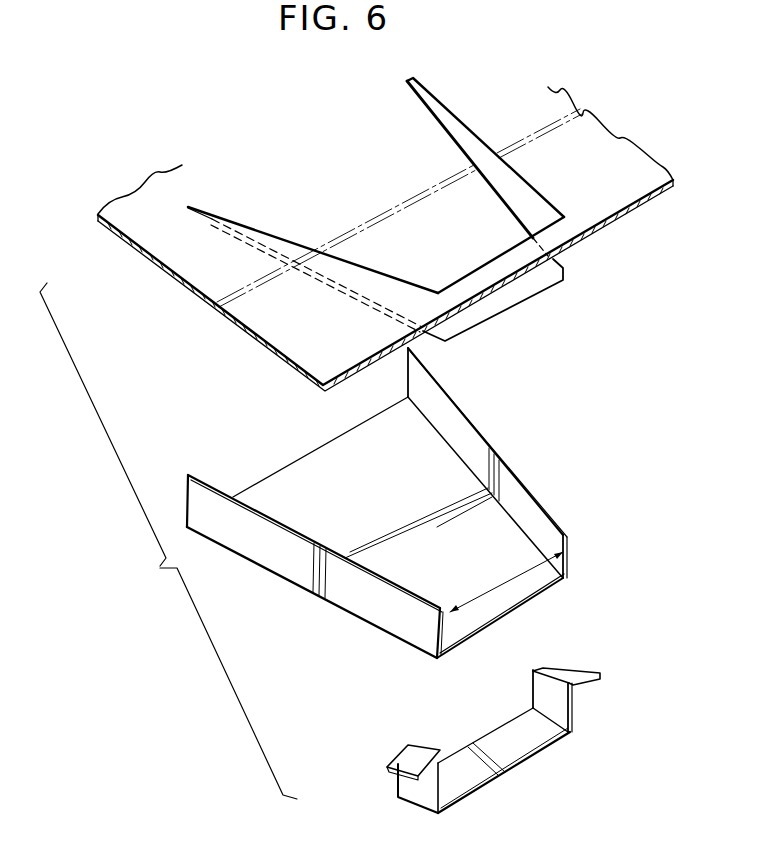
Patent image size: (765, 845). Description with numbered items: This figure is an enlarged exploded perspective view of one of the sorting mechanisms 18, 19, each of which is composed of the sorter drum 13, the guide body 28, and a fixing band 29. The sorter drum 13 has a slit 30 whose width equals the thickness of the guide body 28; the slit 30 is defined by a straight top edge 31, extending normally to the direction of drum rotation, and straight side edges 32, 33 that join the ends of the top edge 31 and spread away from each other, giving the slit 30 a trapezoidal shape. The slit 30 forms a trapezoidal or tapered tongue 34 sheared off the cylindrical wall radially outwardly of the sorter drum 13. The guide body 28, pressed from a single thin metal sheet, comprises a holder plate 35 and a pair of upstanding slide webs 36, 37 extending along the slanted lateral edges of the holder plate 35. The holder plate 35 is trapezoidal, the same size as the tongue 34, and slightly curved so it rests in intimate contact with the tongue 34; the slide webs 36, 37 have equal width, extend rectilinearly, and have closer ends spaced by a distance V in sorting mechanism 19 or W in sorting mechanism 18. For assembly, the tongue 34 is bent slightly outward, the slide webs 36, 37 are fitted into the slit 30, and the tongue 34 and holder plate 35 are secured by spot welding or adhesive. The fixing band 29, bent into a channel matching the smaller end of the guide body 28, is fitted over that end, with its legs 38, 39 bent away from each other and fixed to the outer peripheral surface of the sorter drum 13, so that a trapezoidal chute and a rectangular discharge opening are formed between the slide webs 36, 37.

The sorter drum 13 is at (647, 163).
The sorting mechanism 18 is at (168, 541).
The sorting mechanism 19 is at (168, 541).
The guide body 28 is at (379, 512).
The fixing band 29 is at (484, 725).
The slit 30 is at (463, 137).
The top edge 31 is at (500, 257).
The side edge 32 is at (293, 246).
The side edge 33 is at (515, 170).
The tongue 34 is at (398, 198).
The holder plate 35 is at (500, 618).
The slide web 36 is at (345, 602).
The slide web 37 is at (530, 498).
The leg 38 is at (402, 757).
The leg 39 is at (578, 670).